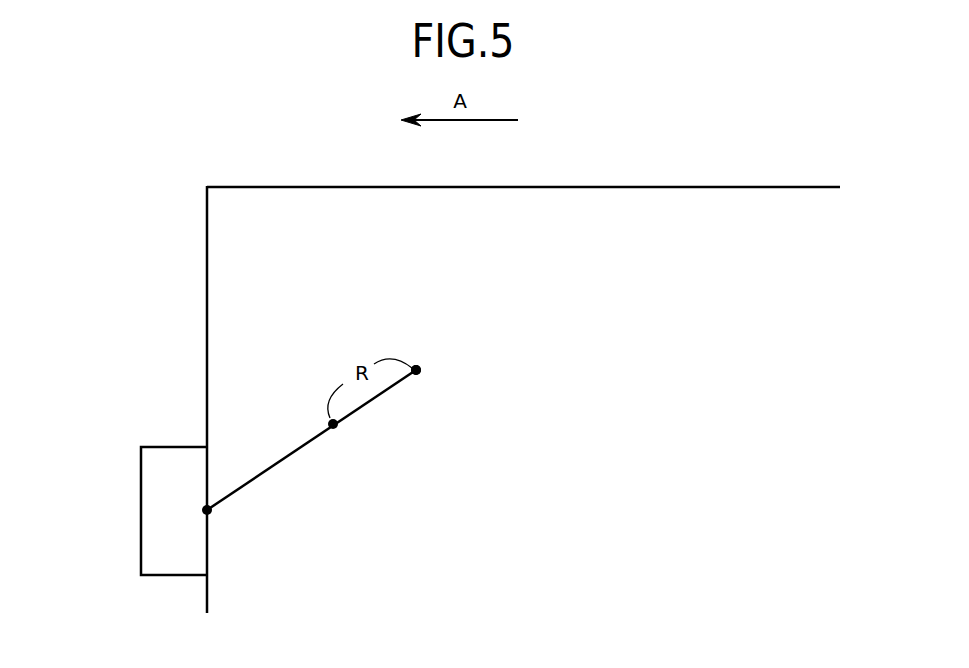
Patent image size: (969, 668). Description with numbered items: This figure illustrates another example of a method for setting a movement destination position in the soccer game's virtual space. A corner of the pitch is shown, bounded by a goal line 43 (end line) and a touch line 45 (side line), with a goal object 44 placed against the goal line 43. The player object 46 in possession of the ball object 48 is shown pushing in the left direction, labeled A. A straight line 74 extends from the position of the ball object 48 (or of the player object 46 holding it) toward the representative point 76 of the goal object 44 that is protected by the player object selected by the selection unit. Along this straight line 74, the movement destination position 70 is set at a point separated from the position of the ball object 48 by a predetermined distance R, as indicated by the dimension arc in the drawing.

The side wall 43 is at (207, 260).
The block 44 is at (141, 511).
The top wall 45 is at (707, 187).
The shaft 46 is at (416, 370).
The pivot 48 is at (420, 375).
The joint 70 is at (338, 430).
The link arm 74 is at (265, 473).
The pivot point 76 is at (200, 516).